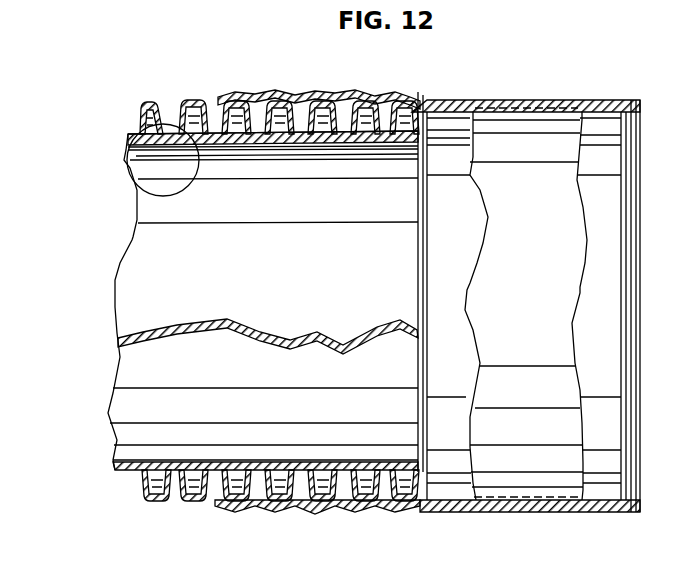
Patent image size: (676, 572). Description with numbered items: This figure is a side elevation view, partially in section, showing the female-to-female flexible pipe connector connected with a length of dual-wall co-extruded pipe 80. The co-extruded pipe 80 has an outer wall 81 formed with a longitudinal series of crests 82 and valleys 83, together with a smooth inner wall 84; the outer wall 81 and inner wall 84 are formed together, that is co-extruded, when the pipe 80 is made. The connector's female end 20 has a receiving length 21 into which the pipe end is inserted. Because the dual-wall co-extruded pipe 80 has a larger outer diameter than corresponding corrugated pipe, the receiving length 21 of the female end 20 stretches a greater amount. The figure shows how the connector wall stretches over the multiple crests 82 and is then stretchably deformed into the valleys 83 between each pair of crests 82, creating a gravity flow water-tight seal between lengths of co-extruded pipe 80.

The female end 20 is at (423, 70).
The receiving length 21 is at (415, 77).
The dual-wall co-extruded pipe 80 is at (150, 363).
The outer wall 81 is at (124, 123).
The crests 82 is at (197, 102).
The valleys 83 is at (160, 108).
The smooth inner wall 84 is at (143, 190).